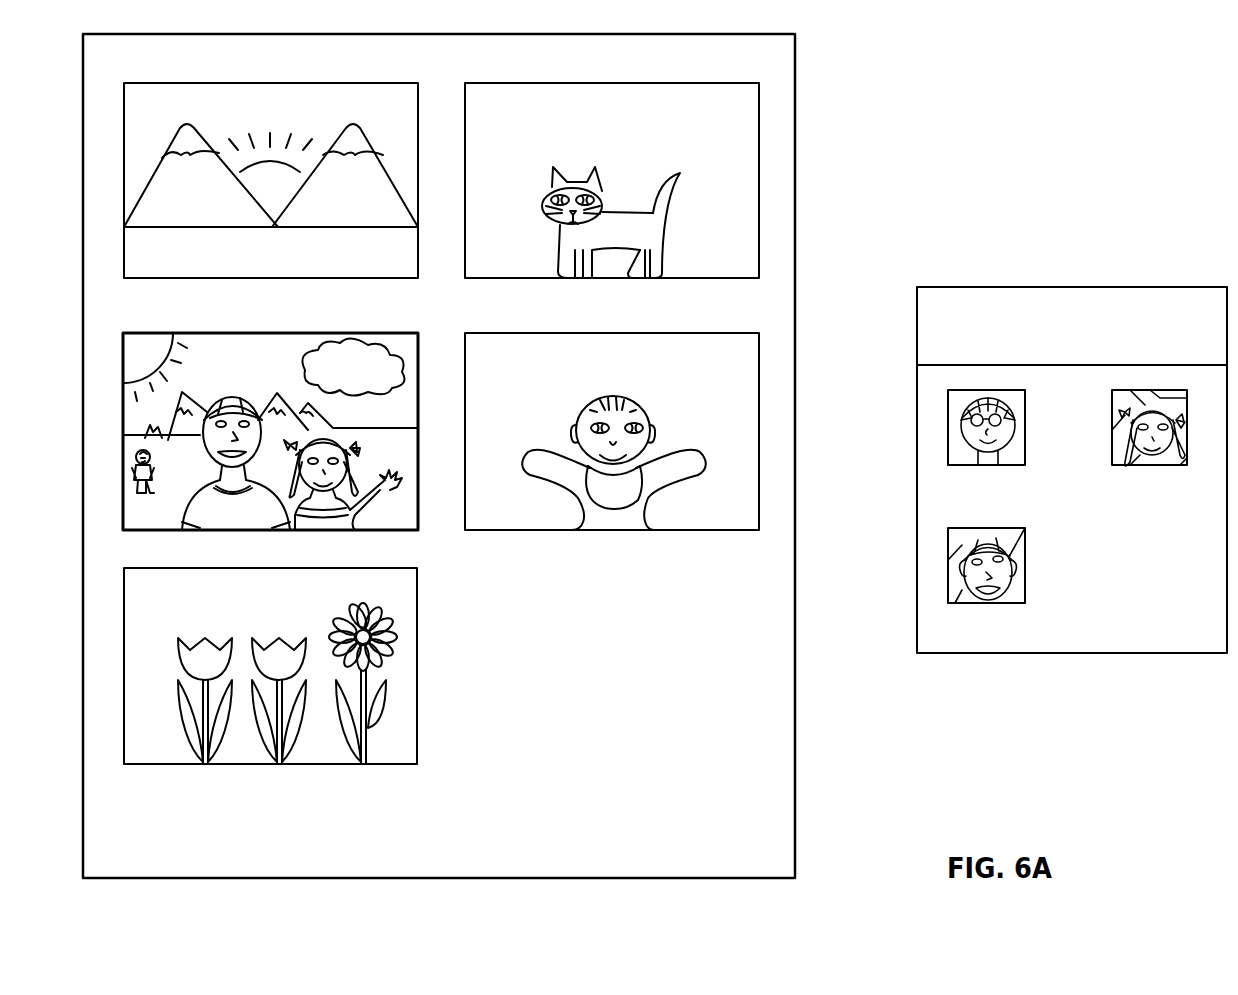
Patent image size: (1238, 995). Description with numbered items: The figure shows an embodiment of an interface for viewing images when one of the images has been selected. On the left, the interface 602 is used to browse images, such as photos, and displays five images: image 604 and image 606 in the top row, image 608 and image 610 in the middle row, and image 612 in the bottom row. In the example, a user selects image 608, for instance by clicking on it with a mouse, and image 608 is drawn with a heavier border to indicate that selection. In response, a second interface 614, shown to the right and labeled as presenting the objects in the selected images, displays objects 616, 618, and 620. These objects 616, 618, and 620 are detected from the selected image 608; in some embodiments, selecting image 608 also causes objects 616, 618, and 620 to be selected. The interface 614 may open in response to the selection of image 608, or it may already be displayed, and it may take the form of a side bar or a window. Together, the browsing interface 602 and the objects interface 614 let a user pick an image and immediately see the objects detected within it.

The interface 602 is at (620, 34).
The image 604 is at (350, 83).
The image 606 is at (691, 83).
The image 608 is at (350, 333).
The image 610 is at (691, 333).
The image 612 is at (380, 764).
The interface 614 is at (1113, 287).
The object 616 is at (1010, 465).
The object 618 is at (1150, 465).
The object 620 is at (1025, 587).